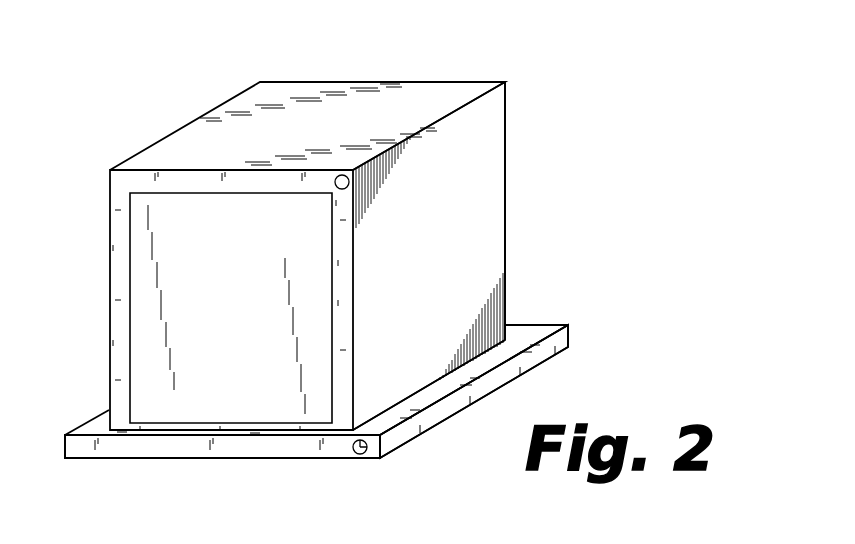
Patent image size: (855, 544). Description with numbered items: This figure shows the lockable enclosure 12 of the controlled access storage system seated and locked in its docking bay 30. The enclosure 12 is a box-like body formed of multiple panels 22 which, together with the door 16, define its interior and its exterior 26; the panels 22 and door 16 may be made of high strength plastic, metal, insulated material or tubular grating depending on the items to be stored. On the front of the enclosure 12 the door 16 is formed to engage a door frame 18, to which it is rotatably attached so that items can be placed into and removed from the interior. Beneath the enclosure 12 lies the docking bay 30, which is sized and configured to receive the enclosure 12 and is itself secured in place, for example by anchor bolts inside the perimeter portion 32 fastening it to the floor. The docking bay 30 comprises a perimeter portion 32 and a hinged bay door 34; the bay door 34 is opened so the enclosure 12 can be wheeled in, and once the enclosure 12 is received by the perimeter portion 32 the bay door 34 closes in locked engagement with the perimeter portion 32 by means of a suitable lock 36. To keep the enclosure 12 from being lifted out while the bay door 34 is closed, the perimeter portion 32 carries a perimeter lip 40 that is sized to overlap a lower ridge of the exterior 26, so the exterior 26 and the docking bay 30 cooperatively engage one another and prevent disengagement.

The lockable enclosure 12 is at (307, 256).
The door 16 is at (231, 308).
The door frame 18 is at (348, 267).
The panels 22 is at (422, 100).
The exterior 26 is at (482, 190).
The docking bay 30 is at (98, 420).
The perimeter portion 32 is at (518, 370).
The bay door 34 is at (240, 447).
The lock 36 is at (353, 453).
The perimeter lip 40 is at (443, 395).